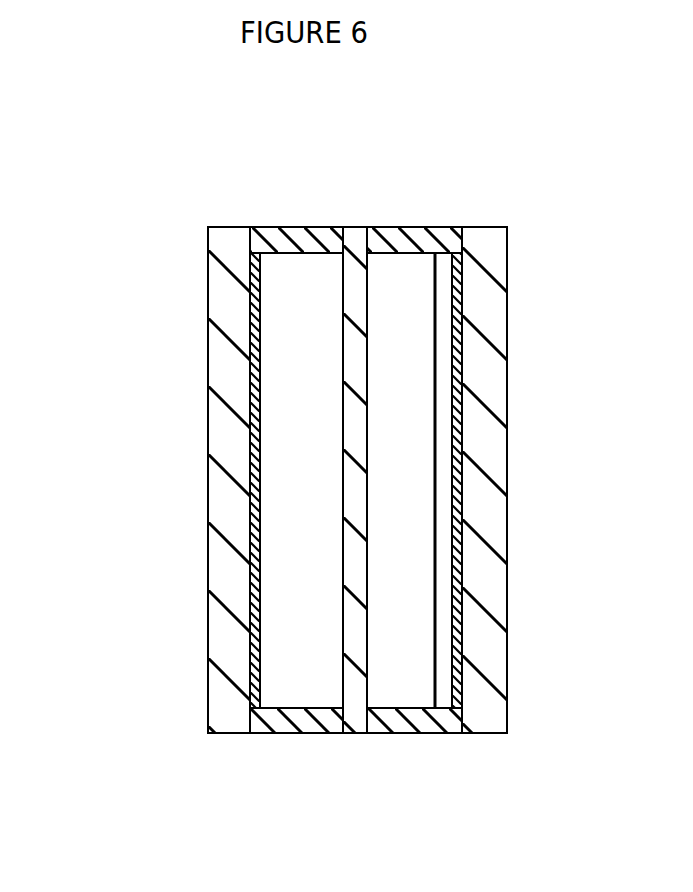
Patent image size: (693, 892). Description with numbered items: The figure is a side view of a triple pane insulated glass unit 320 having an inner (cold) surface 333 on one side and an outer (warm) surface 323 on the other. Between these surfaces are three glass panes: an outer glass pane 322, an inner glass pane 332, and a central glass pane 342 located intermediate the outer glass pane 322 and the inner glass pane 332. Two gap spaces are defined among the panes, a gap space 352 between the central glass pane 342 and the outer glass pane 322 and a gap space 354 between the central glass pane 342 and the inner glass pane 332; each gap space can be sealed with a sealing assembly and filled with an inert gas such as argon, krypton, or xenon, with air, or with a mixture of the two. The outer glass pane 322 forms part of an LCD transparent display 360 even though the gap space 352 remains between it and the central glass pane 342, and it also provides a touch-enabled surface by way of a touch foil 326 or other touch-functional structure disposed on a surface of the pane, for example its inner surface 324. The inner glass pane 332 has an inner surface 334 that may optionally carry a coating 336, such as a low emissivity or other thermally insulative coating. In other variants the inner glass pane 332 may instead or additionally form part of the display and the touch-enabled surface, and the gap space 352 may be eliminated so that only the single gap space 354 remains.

The insulated glass unit 320 is at (150, 238).
The outer glass pane 322 is at (484, 245).
The outer (warm) surface 323 is at (510, 367).
The inner surface 324 is at (447, 650).
The touch foil 326 is at (455, 266).
The inner glass pane 332 is at (225, 243).
The inner (cold) surface 333 is at (205, 555).
The inner surface 334 is at (265, 648).
The coating 336 is at (257, 263).
The central glass pane 342 is at (357, 228).
The gap space 352 is at (400, 485).
The gap space 354 is at (287, 389).
The LCD transparent display 360 is at (440, 438).